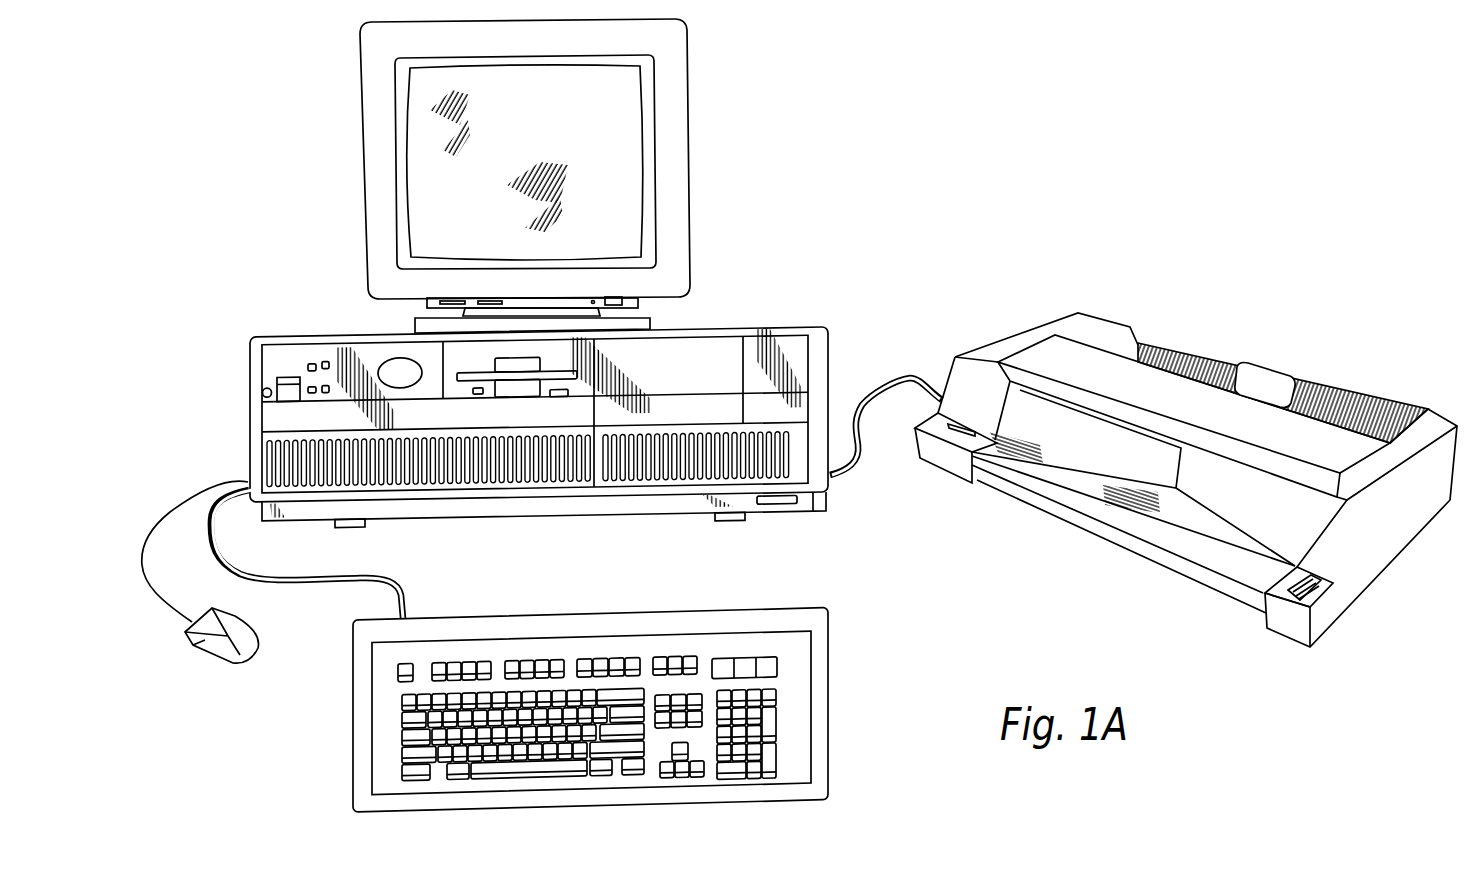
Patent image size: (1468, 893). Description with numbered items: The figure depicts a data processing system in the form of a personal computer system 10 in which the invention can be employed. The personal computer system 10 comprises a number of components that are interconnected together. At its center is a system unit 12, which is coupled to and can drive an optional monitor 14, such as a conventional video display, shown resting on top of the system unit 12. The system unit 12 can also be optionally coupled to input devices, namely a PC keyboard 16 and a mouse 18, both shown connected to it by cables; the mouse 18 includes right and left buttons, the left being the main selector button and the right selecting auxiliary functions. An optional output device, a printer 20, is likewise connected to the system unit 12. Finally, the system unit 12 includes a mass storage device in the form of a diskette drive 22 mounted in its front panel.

The personal computer system 10 is at (898, 137).
The system unit 12 is at (539, 402).
The monitor 14 is at (704, 184).
The PC keyboard 16 is at (702, 596).
The mouse 18 is at (205, 643).
The printer 20 is at (1011, 310).
The diskette drive 22 is at (525, 383).